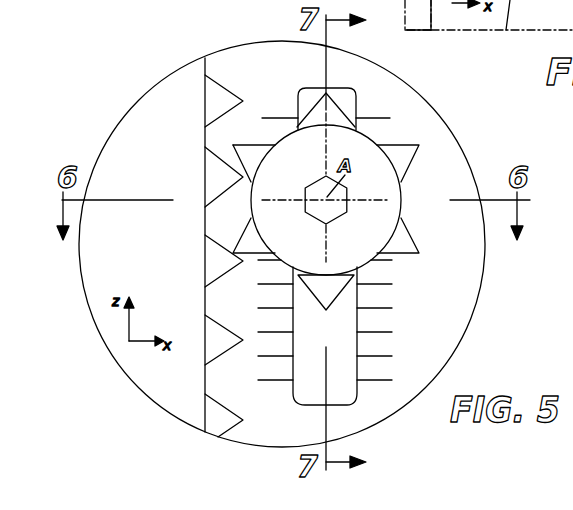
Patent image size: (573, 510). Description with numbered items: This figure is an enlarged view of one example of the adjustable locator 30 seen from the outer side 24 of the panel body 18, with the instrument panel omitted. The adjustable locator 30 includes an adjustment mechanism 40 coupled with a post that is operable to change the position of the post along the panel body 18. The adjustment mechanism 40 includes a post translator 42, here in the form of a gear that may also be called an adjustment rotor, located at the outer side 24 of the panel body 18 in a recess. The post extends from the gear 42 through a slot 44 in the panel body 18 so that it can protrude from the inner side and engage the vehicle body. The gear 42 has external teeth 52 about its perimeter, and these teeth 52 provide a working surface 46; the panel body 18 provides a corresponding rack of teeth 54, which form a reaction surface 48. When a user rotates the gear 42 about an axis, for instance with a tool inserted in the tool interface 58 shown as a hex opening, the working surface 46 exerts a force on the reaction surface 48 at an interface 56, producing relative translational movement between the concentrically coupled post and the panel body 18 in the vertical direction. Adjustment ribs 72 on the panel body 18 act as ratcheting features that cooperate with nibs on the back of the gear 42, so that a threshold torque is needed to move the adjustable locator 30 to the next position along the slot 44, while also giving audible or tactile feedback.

The panel body 18 is at (135, 132).
The outer side 24 is at (198, 66).
The adjustable locator 30 is at (426, 127).
The adjustment mechanism 40 is at (303, 130).
The post translator 42 is at (388, 207).
The slot 44 is at (337, 355).
The working surface 46 is at (235, 151).
The reaction surface 48 is at (218, 160).
The external teeth 52 is at (410, 167).
The rack of teeth 54 is at (218, 267).
The interface 56 is at (247, 178).
The tool interface 58 is at (346, 212).
The adjustment ribs 72 is at (387, 332).